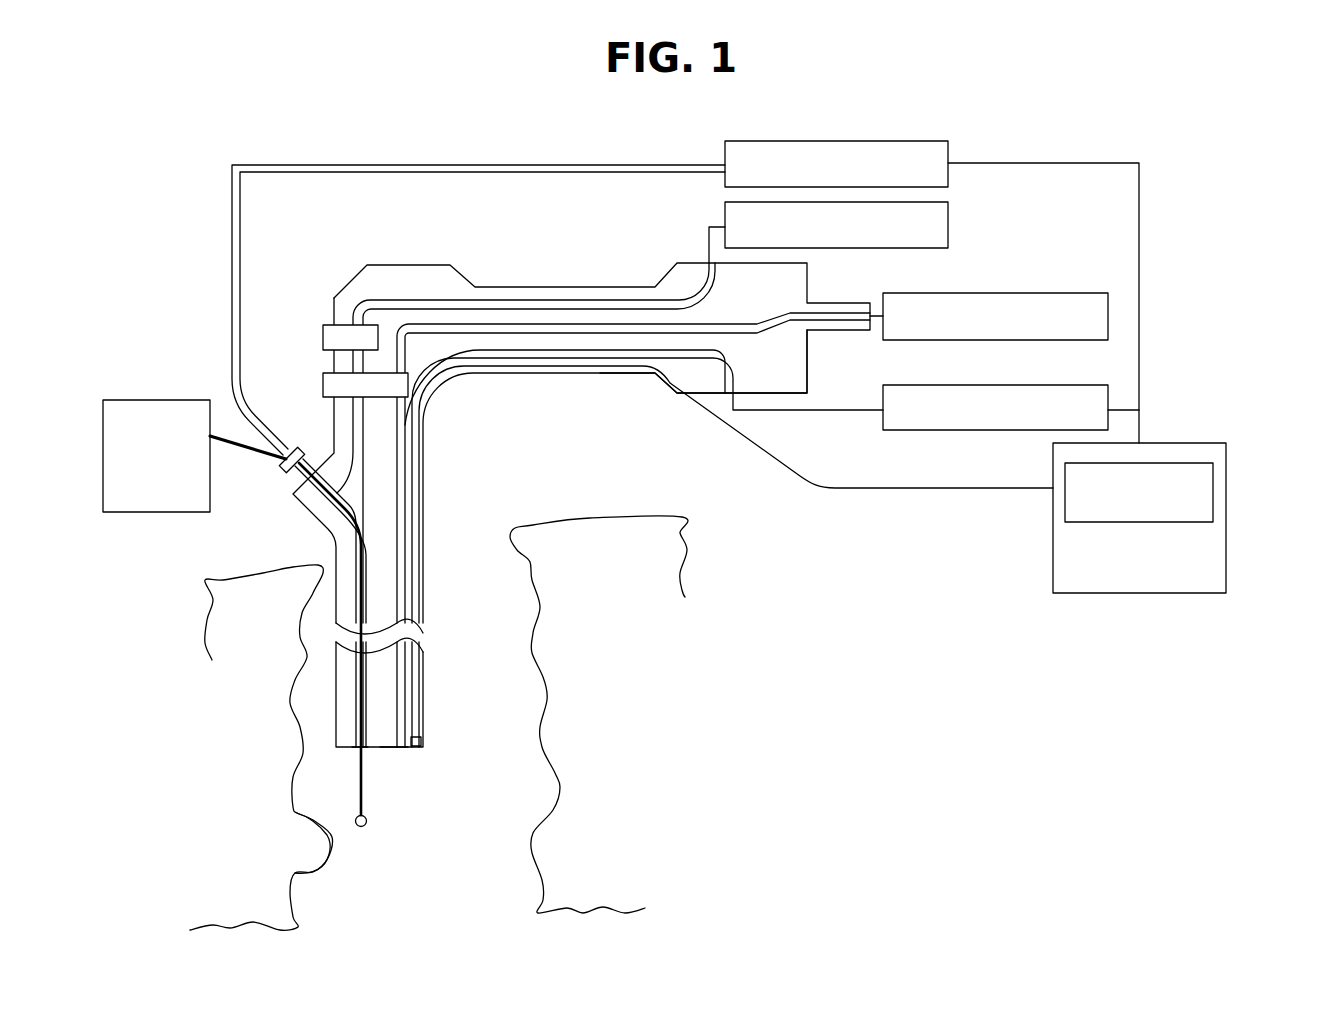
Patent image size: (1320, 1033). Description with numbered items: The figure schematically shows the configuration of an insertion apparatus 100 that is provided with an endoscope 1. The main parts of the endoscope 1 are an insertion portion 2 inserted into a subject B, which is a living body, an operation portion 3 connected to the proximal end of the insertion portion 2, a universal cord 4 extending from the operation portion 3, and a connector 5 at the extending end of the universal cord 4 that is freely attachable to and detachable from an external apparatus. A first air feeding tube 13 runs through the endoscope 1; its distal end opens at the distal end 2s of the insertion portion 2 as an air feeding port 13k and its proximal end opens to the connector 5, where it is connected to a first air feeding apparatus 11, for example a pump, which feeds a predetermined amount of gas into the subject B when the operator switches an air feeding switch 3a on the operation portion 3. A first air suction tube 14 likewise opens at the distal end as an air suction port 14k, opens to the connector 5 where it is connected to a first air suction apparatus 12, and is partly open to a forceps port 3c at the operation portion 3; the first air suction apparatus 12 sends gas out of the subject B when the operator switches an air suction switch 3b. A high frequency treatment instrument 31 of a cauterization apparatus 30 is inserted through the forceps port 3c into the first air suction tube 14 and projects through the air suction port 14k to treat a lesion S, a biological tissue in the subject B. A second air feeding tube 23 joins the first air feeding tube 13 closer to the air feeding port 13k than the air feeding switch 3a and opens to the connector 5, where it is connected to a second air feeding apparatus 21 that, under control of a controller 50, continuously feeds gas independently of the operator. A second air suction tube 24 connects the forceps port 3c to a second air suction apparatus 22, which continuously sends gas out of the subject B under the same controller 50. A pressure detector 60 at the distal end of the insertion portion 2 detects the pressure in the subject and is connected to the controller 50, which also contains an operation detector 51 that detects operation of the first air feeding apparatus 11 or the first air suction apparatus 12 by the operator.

The insertion apparatus 100 is at (1192, 193).
The endoscope 1 is at (410, 254).
The insertion portion 2 is at (424, 660).
The distal end of insertion portion 2s is at (388, 748).
The operation portion 3 is at (347, 284).
The air feeding switch 3a is at (323, 385).
The air suction switch 3b is at (323, 337).
The forceps port 3c is at (278, 464).
The universal cord 4 is at (613, 373).
The connector 5 is at (689, 395).
The first air feeding apparatus 11 is at (990, 293).
The first air suction apparatus 12 is at (949, 228).
The first air feeding tube 13 is at (574, 333).
The air feeding port 13k is at (402, 748).
The first air suction tube 14 is at (533, 303).
The air suction port 14k is at (357, 748).
The second air feeding apparatus 21 is at (990, 385).
The second air suction apparatus 22 is at (949, 152).
The second air feeding tube 23 is at (532, 353).
The second air suction tube 24 is at (512, 163).
The cauterization apparatus 30 is at (157, 400).
The high frequency treatment instrument 31 is at (366, 783).
The controller 50 is at (1227, 543).
The operation detector 51 is at (1215, 491).
The pressure detector 60 is at (422, 741).
The subject B is at (546, 704).
The lesion S is at (327, 868).